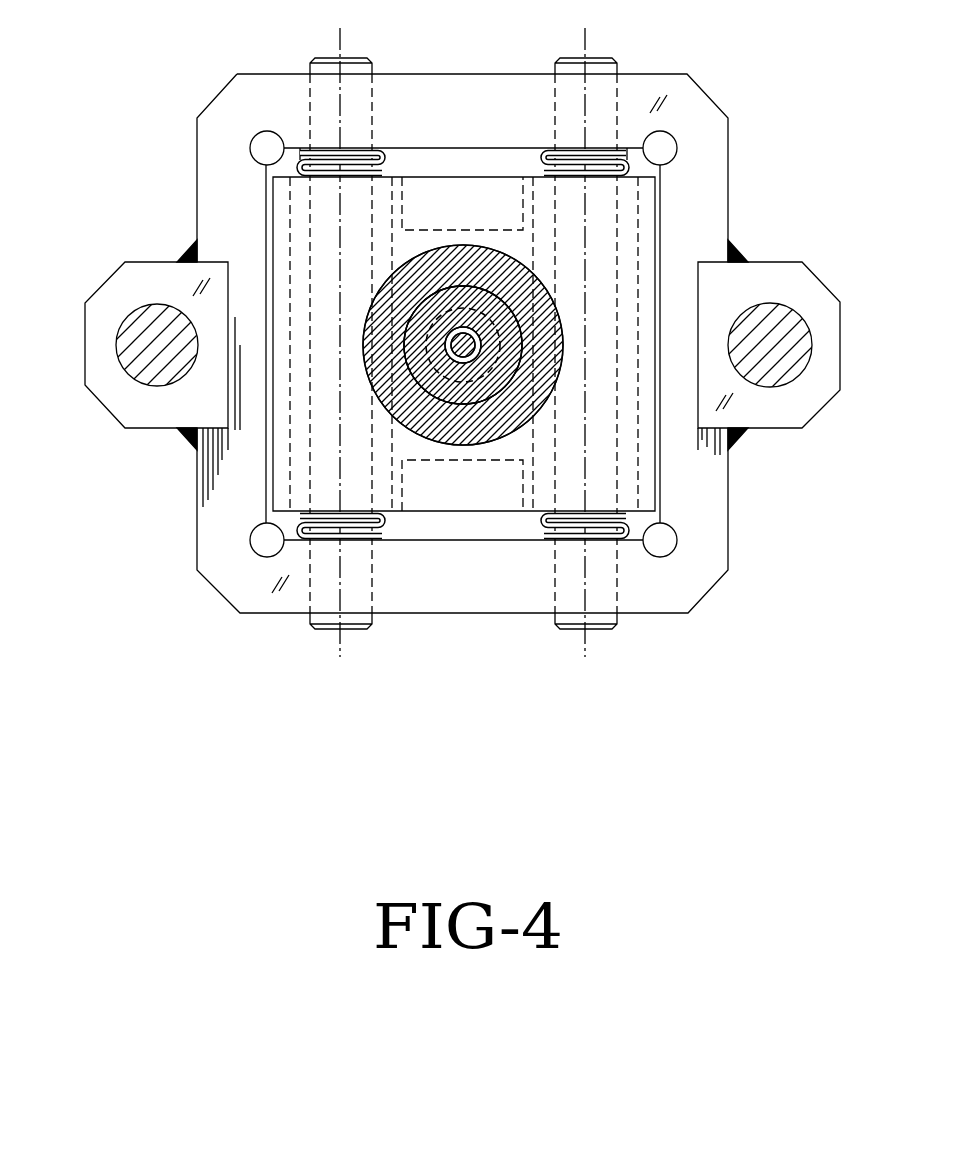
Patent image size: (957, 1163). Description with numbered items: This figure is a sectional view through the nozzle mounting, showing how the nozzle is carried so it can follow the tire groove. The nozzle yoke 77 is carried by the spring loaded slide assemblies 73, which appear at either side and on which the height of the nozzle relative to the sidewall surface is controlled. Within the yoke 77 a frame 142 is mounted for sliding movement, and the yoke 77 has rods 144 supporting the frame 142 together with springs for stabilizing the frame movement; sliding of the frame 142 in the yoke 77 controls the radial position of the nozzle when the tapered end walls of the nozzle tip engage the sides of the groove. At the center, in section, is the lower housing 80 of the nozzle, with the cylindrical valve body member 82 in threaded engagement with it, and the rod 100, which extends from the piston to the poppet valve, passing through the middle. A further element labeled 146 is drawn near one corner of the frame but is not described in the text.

The nozzle yoke 77 is at (231, 104).
The slide assemblies 73 is at (153, 323).
The lower housing 80 is at (458, 252).
The cylindrical valve body member 82 is at (470, 378).
The rod 100 is at (472, 356).
The frame 142 is at (625, 265).
The rods 144 is at (324, 620).
The corner rod with ball 146 is at (300, 528).